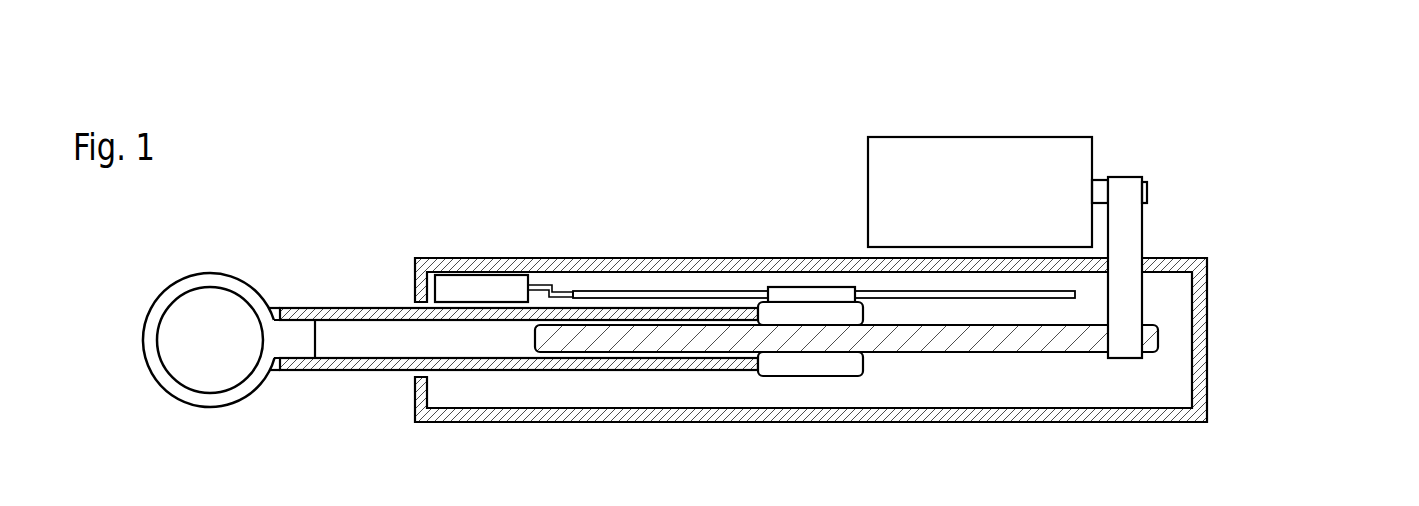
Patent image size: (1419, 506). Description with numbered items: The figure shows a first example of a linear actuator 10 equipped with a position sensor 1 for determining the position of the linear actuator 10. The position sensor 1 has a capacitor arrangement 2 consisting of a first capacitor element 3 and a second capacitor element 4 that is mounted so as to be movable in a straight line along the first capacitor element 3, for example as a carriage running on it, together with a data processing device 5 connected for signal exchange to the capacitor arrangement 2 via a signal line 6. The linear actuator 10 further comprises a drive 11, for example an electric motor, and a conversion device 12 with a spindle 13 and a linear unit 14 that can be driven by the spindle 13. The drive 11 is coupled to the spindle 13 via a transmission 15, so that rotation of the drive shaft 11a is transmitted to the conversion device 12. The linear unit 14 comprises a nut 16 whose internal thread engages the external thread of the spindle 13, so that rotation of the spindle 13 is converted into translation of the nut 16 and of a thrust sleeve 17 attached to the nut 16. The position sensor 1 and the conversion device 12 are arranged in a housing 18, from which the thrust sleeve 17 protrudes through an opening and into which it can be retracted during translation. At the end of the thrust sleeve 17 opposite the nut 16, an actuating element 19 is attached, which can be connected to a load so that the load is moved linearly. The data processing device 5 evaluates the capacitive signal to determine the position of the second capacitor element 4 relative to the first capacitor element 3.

The position sensor 1 is at (398, 225).
The capacitor arrangement 2 is at (752, 249).
The first capacitor element 3 is at (630, 292).
The second capacitor element 4 is at (800, 287).
The data processing device 5 is at (497, 275).
The signal line 6 is at (562, 292).
The linear actuator 10 is at (1262, 97).
The drive 11 is at (993, 202).
The drive shaft 11a is at (1099, 178).
The conversion device 12 is at (1210, 340).
The spindle 13 is at (985, 354).
The linear unit 14 is at (712, 403).
The transmission 15 is at (1145, 251).
The nut 16 is at (803, 378).
The thrust sleeve 17 is at (388, 371).
The housing 18 is at (513, 423).
The actuating element 19 is at (208, 408).